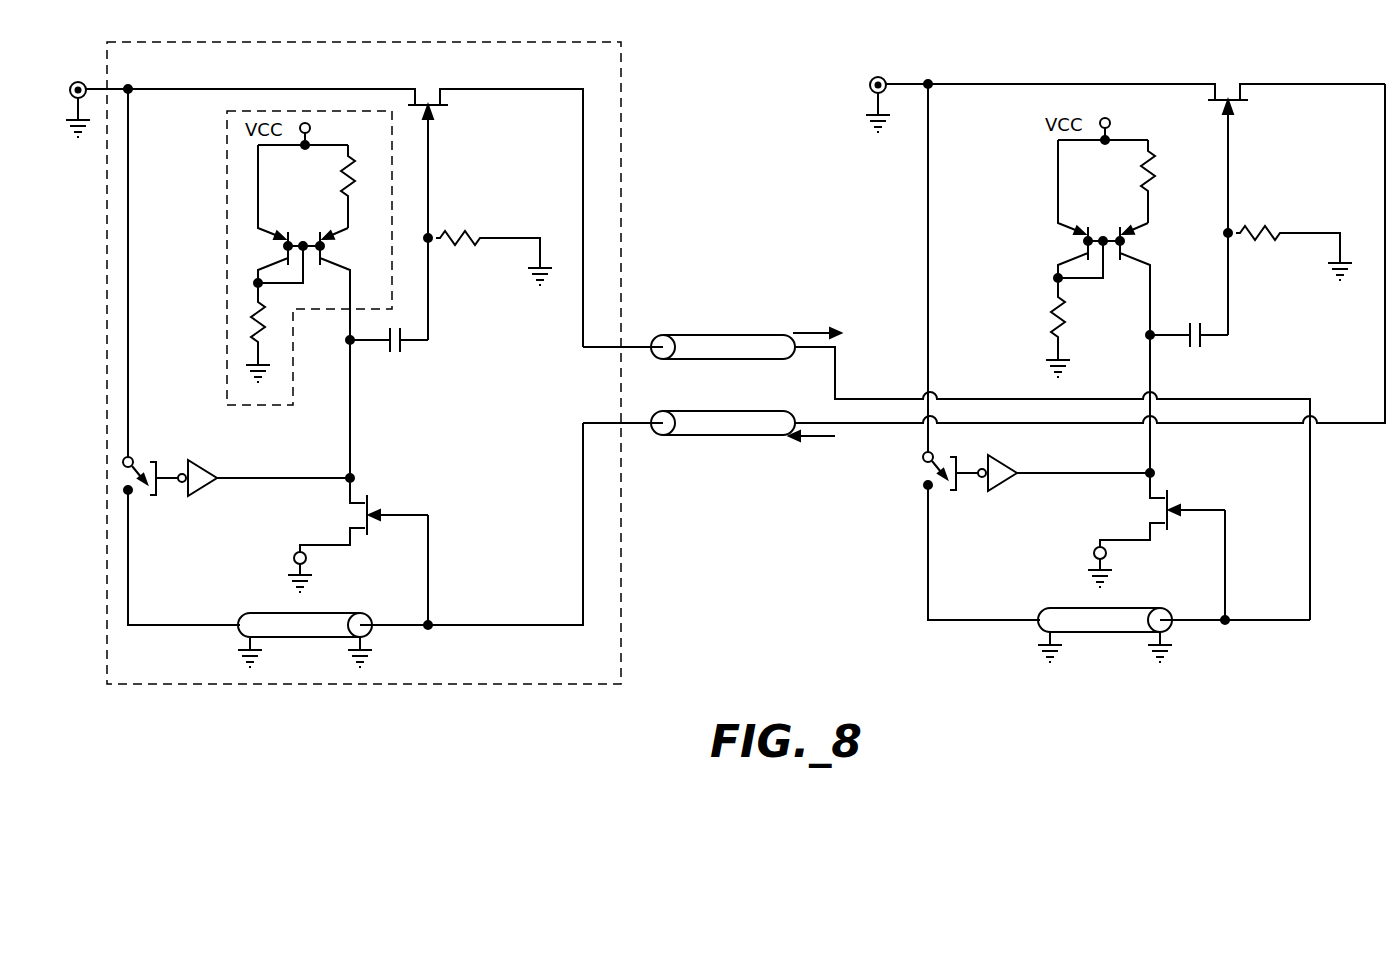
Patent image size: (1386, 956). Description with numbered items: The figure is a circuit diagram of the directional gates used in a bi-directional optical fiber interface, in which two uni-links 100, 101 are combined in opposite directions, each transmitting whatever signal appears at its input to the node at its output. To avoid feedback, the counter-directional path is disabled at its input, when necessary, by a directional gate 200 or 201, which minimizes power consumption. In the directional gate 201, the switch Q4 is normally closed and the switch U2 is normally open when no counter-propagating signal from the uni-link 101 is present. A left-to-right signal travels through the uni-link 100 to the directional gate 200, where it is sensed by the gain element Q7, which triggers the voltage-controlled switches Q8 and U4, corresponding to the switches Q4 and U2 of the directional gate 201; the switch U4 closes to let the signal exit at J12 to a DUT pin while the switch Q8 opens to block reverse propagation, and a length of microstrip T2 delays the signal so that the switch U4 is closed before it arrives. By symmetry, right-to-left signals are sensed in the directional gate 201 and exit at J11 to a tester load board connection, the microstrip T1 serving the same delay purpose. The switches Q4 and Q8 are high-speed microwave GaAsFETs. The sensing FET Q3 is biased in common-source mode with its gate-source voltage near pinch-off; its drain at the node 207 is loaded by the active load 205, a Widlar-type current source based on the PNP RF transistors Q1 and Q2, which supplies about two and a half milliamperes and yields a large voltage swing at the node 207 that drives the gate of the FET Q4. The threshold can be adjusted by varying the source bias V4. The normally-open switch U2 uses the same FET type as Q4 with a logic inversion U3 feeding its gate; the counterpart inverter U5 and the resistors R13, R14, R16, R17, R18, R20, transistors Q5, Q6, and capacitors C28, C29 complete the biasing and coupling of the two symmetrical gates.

The connection J11 is at (78, 82).
The directional gate 201 is at (621, 40).
The active load 205 is at (226, 177).
The switch Q4 is at (430, 102).
The resistor R13 is at (368, 183).
The resistor R14 is at (461, 234).
The PNP RF transistor Q2 is at (285, 247).
The PNP RF transistor Q1 is at (322, 247).
The resistor R16 is at (252, 312).
The capacitor C28 is at (402, 347).
The logic inversion U3 is at (211, 465).
The switch U2 is at (132, 494).
The node 207 is at (352, 446).
The sensing FET Q3 is at (353, 504).
The source bias V4 is at (307, 559).
The length of microstrip T1 is at (266, 612).
The uni-link 100 is at (679, 344).
The uni-link 101 is at (680, 437).
The connection J12 is at (900, 68).
The switch Q8 is at (1156, 193).
The resistor R17 is at (1175, 181).
The resistor R18 is at (1288, 233).
The PNP transistor Q6 is at (1048, 211).
The PNP transistor Q5 is at (1138, 276).
The resistor R20 is at (1016, 327).
The capacitor C29 is at (1212, 348).
The inverter U5 is at (1055, 413).
The switch U4 is at (962, 489).
The gain element Q7 is at (1161, 510).
The length of microstrip T2 is at (1093, 618).
The directional gate 200 is at (896, 655).